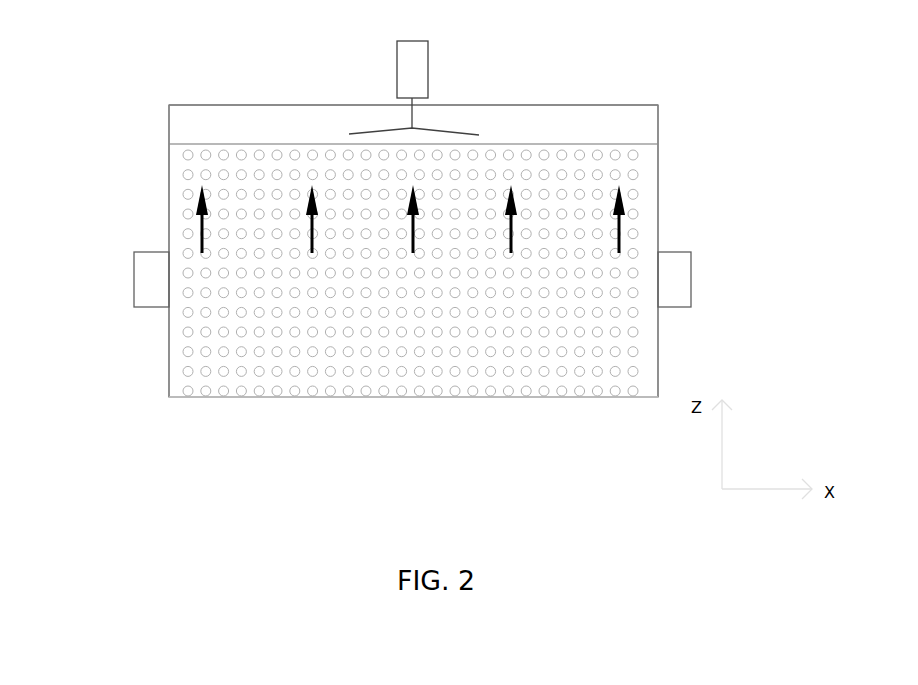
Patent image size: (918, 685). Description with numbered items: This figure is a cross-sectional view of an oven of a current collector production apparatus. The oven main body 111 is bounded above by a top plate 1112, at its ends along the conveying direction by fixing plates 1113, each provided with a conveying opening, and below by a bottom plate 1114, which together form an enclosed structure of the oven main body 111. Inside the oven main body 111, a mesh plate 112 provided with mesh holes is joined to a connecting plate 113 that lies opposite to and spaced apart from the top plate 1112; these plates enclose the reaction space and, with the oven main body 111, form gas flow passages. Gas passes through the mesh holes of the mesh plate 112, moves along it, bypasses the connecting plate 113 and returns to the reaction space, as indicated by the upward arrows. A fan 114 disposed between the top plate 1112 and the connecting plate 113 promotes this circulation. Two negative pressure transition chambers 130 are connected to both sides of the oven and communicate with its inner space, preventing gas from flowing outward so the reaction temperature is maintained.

The oven main body 111 is at (641, 104).
The top plate 1112 is at (281, 105).
The connecting plate 113 is at (233, 145).
The fixing plate 1113 is at (168, 195).
The bottom plate 1114 is at (515, 397).
The negative pressure transition chamber 130 is at (152, 290).
The mesh plate 112 is at (357, 378).
The fan 114 is at (410, 76).